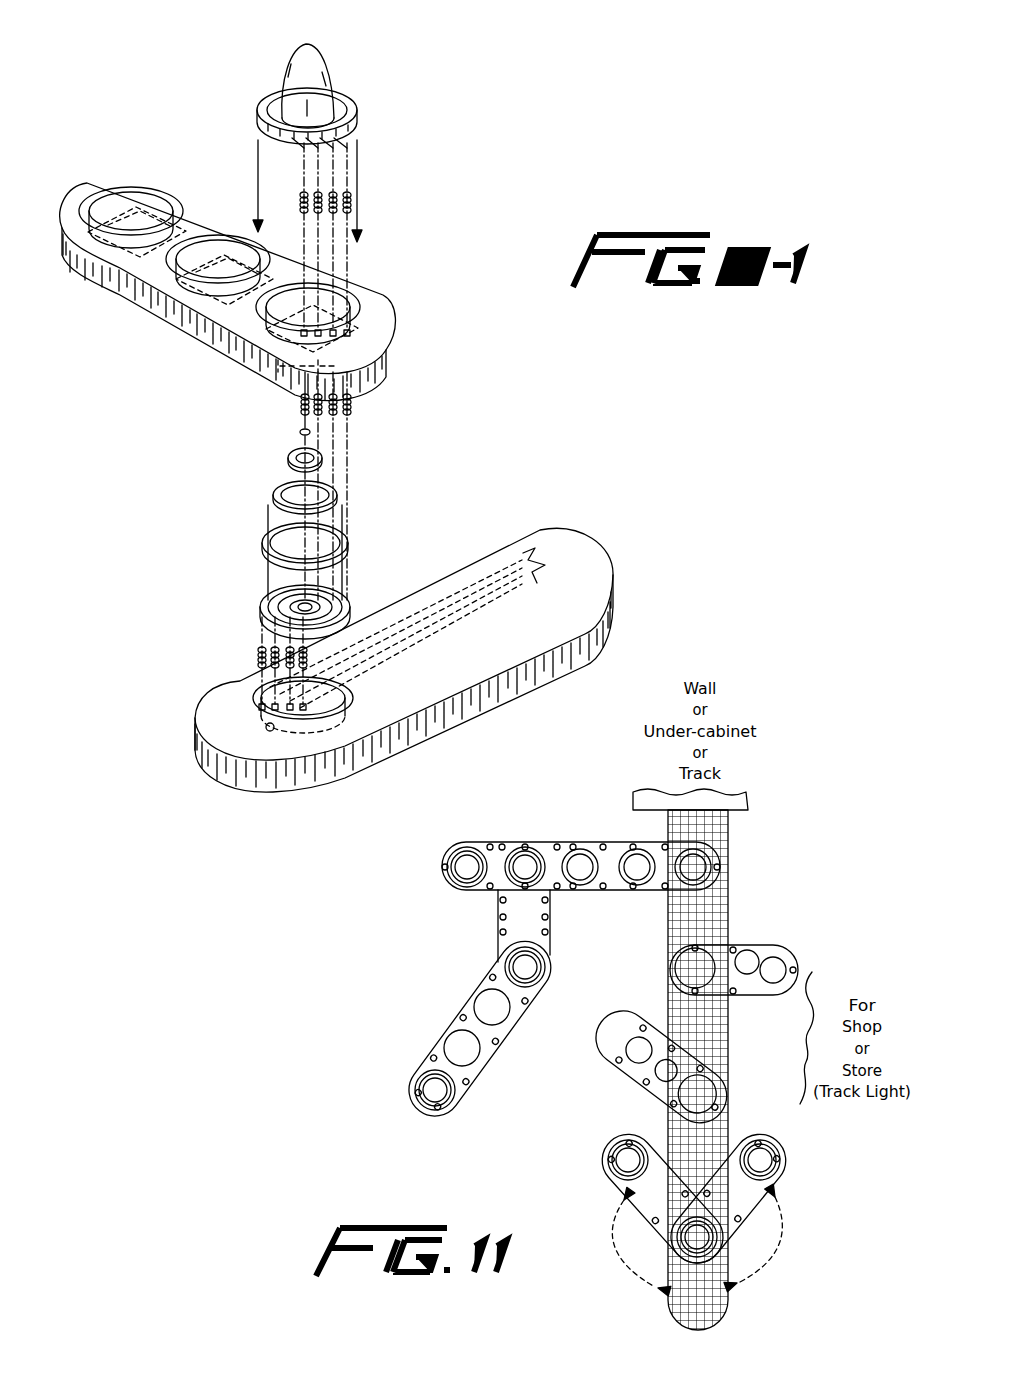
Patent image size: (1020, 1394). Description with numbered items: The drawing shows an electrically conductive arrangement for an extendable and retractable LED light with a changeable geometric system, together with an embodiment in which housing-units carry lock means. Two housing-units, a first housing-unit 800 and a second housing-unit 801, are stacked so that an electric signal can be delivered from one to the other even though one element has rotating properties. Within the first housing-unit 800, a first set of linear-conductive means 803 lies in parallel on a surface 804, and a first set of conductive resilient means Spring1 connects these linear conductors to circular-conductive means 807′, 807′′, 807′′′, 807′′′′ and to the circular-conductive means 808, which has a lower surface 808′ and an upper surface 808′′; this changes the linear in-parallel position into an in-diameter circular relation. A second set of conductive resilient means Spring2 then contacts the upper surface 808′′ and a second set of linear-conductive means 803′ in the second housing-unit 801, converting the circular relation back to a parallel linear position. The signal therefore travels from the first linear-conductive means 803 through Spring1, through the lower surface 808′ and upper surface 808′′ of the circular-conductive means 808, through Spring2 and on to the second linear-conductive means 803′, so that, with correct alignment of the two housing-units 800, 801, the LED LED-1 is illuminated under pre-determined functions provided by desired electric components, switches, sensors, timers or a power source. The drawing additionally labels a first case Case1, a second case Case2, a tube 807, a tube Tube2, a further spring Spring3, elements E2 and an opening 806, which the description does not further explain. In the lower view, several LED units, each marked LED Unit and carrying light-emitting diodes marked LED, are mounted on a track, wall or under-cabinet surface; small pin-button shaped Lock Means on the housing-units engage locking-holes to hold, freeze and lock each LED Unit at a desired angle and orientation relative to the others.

In FIG. 8-1, the LED LED-1 is at (292, 70).
In FIG. 8-1, the upper case Case2 is at (357, 117).
In FIG. 8-1, the electrode pins E2 is at (348, 150).
In FIG. 8-1, the third spring Spring3 is at (355, 204).
In FIG. 8-1, the second set of linear-conductive means 803′ is at (118, 181).
In FIG. 8-1, the second housing-unit 801 is at (313, 293).
In FIG. 8-1, the second tube Tube2 is at (366, 322).
In FIG. 8-1, the second set of conductive resilient means Spring2 is at (352, 408).
In FIG. 8-1, the circular-conductive means 807′′′′ is at (299, 430).
In FIG. 8-1, the circular-conductive means 807′′′ is at (290, 457).
In FIG. 8-1, the circular-conductive means 807′′ is at (277, 497).
In FIG. 8-1, the circular-conductive means 807′ is at (263, 543).
In FIG. 8-1, the Tube1 807 is at (262, 608).
In FIG. 8-1, the circular-conductive means 808 is at (278, 594).
In FIG. 8-1, the upper surface 808′′ is at (330, 592).
In FIG. 8-1, the first set of conductive resilient means Spring1 is at (262, 662).
In FIG. 8-1, the lower case Case1 is at (350, 617).
In FIG. 8-1, the first housing-unit 800 is at (613, 608).
In FIG. 8-1, the first set of linear-conductive means 803 is at (560, 562).
In FIG. 8-1, the lower surface 808′ is at (345, 638).
In FIG. 8-1, the surface 804 is at (322, 707).
In FIG. 8-1, the pin hole 806 is at (265, 730).
In FIG. 11, the LED-unit LED Unit is at (420, 1090).
In FIG. 11, the element LED is at (457, 1032).
In FIG. 11, the lock means Lock Means is at (762, 945).